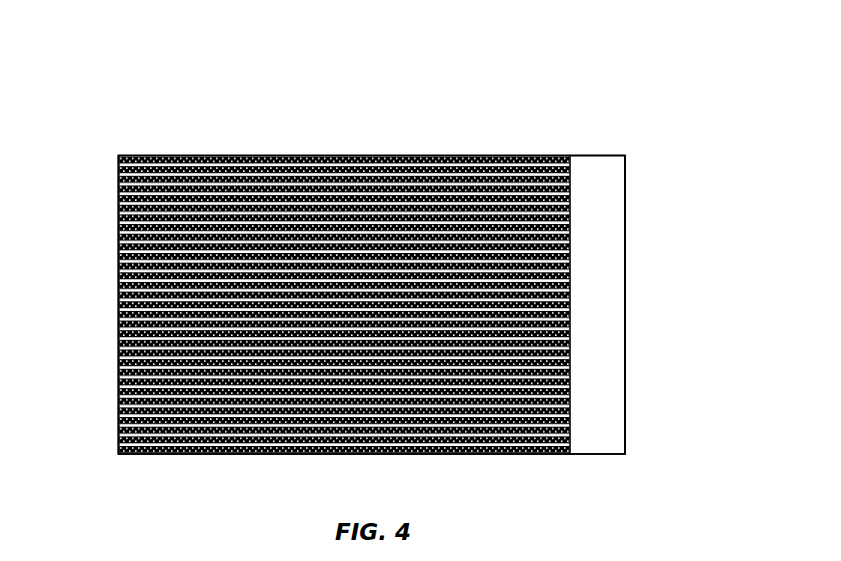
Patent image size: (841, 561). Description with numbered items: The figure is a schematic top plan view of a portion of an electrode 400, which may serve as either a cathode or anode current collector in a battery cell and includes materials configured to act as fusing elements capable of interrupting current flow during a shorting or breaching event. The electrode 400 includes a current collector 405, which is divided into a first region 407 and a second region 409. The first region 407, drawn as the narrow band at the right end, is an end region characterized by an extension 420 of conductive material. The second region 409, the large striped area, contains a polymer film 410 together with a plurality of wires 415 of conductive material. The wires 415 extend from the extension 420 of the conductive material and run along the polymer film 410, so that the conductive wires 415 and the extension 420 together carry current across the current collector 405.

The electrode 400 is at (71, 121).
The current collector 405 is at (626, 381).
The first region 407 is at (597, 155).
The second region 409 is at (400, 155).
The polymer film 410 is at (118, 292).
The wires 415 is at (203, 156).
The extension 420 is at (626, 269).